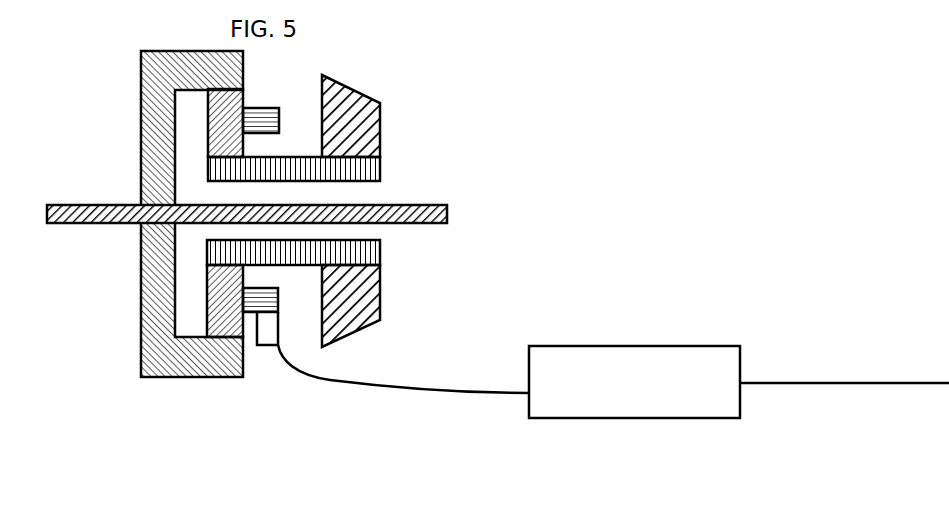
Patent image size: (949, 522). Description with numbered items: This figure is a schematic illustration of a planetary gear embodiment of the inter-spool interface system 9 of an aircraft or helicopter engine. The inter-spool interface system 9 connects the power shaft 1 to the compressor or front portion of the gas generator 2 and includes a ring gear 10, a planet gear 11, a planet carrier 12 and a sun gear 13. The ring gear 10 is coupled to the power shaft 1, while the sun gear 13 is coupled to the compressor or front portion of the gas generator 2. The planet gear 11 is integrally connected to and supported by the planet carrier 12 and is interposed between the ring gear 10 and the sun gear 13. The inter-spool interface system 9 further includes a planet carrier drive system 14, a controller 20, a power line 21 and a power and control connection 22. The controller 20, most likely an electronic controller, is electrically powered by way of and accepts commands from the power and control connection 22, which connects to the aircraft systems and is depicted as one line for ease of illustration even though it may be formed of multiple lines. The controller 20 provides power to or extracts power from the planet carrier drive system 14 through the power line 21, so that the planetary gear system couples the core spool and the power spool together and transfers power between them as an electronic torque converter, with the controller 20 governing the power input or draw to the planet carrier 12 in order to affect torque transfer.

The power shaft 1 is at (103, 205).
The gas generator 2 is at (350, 92).
The inter-spool interface system 9 is at (144, 335).
The ring gear 10 is at (185, 377).
The planet gear 11 is at (223, 118).
The planet carrier 12 is at (260, 117).
The sun gear 13 is at (380, 252).
The planet carrier drive system 14 is at (267, 337).
The controller 20 is at (637, 418).
The power line 21 is at (422, 390).
The power and control connection 22 is at (858, 383).